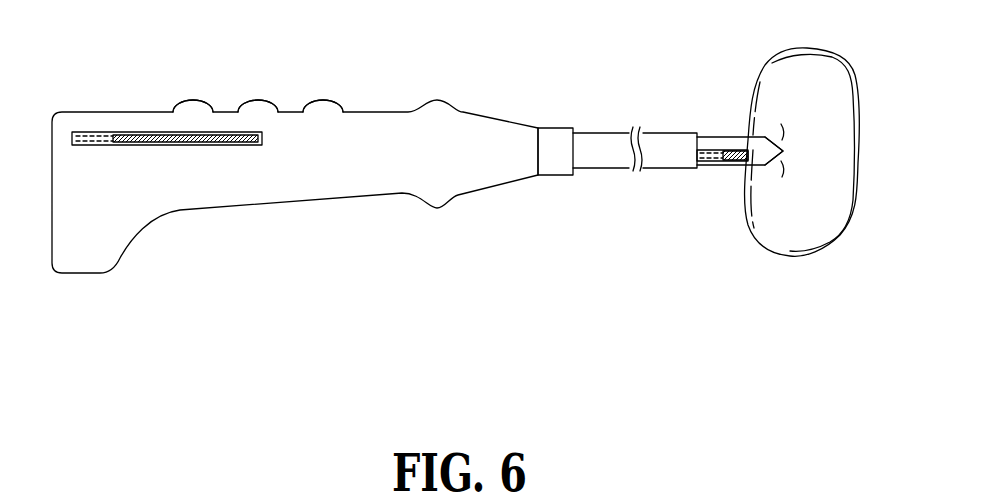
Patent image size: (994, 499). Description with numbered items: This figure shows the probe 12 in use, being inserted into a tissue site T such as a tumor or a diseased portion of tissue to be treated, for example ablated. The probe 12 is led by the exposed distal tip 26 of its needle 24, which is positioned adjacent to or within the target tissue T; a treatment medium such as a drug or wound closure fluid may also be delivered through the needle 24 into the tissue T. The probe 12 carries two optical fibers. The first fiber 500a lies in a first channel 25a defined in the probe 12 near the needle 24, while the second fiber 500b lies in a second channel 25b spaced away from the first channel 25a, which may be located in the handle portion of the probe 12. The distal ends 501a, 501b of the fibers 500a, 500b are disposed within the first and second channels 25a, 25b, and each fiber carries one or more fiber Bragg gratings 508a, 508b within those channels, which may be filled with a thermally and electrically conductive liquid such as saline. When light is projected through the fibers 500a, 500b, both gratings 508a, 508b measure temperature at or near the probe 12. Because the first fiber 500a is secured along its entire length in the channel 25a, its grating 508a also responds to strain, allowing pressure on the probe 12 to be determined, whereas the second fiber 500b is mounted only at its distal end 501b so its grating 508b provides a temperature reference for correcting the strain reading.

The probe 12 is at (403, 54).
The needle 24 is at (590, 119).
The distal tip 26 is at (781, 150).
The first fiber 500a is at (727, 216).
The second fiber 500b is at (223, 74).
The distal end 501a is at (703, 173).
The distal end 501b is at (166, 128).
The fiber Bragg grating 508a is at (730, 150).
The fiber Bragg grating 508b is at (140, 145).
The first channel 25a is at (780, 172).
The second channel 25b is at (215, 145).
The tissue T is at (817, 50).